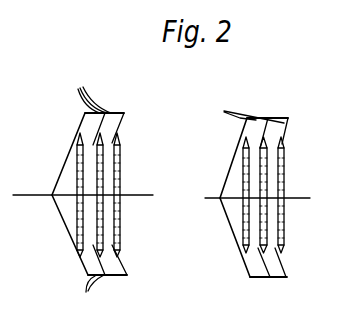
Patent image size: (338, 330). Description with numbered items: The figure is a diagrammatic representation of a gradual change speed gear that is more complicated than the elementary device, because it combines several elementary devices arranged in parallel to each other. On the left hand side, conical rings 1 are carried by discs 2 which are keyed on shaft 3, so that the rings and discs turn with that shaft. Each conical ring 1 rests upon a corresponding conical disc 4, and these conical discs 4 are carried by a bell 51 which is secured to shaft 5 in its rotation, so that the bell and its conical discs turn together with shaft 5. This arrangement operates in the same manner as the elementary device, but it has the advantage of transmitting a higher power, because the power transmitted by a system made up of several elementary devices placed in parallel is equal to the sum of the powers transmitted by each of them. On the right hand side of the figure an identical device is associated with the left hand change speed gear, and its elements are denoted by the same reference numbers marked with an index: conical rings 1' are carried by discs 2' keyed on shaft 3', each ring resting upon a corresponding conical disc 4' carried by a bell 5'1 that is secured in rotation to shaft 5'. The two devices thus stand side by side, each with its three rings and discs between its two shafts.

The conical rings 1 is at (83, 198).
The discs 2 is at (113, 197).
The shaft 3 is at (103, 213).
The conical disc 4 is at (94, 188).
The shaft 5 is at (50, 194).
The bell 51 is at (119, 112).
The conical rings 1' is at (285, 194).
The discs 2' is at (282, 196).
The shaft 3' is at (265, 214).
The conical disc 4' is at (247, 110).
The shaft 5' is at (227, 197).
The bell 5'1 is at (272, 185).